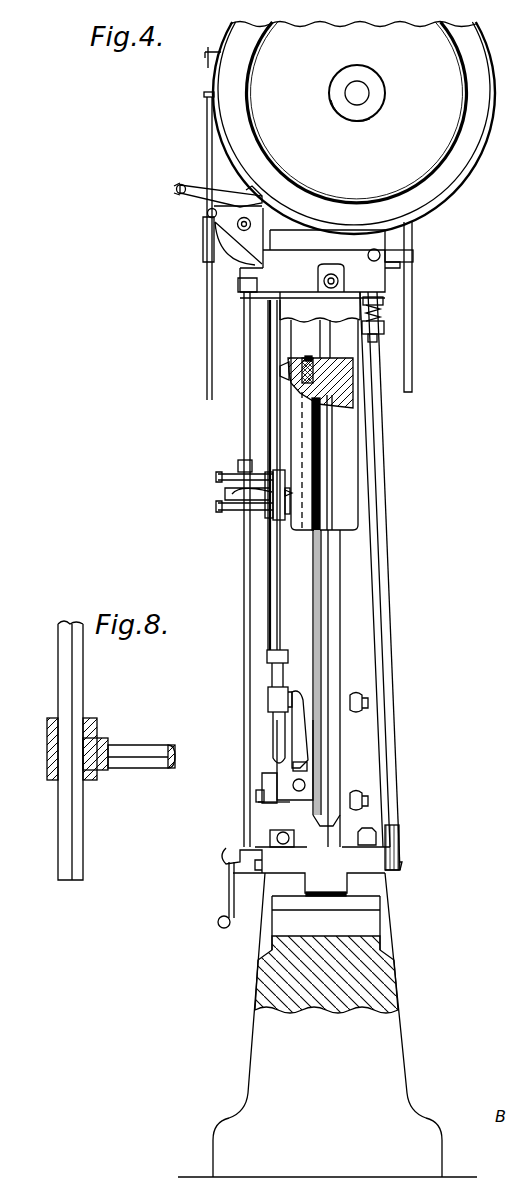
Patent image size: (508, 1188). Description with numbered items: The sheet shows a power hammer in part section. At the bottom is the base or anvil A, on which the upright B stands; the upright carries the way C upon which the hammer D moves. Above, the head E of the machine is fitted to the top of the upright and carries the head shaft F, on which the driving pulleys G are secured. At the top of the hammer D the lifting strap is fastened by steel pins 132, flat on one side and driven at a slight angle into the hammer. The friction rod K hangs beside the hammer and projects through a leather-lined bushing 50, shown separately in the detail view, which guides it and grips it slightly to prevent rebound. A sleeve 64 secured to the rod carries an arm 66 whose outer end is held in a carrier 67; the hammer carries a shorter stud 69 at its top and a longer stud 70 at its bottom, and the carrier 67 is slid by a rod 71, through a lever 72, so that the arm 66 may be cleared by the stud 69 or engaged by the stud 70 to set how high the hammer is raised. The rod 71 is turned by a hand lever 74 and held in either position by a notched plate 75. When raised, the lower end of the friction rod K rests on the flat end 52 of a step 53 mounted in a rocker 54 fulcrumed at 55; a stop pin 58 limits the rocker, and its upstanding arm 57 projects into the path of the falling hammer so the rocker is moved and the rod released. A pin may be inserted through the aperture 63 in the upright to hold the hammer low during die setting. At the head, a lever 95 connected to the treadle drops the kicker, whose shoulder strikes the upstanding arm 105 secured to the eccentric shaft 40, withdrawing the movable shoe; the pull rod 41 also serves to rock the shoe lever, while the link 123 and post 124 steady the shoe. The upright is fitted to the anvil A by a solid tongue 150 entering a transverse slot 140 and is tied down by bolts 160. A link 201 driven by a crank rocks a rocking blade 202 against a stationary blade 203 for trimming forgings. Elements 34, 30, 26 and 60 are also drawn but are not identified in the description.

In FIG. 4, the driving pulleys G is at (466, 165).
In FIG. 4, the head shaft F is at (368, 97).
In FIG. 4, the lever 95 is at (210, 50).
In FIG. 4, the link 123 is at (215, 94).
In FIG. 4, the post 124 is at (207, 146).
In FIG. 4, the pull rod 41 is at (212, 286).
In FIG. 4, the lever 34 is at (198, 197).
In FIG. 4, the upstanding arm 105 is at (252, 192).
In FIG. 4, the eccentric shaft 40 is at (248, 228).
In FIG. 4, the head E is at (386, 243).
In FIG. 4, the post 30 is at (413, 284).
In FIG. 4, the adjusting pin 26 is at (322, 348).
In FIG. 4, the upright B is at (372, 466).
In FIG. 4, the link 201 is at (386, 521).
In FIG. 4, the friction rod K is at (268, 352).
In FIG. 8, the friction rod K is at (80, 702).
In FIG. 4, the stud 69 is at (282, 372).
In FIG. 4, the hammer D is at (355, 438).
In FIG. 4, the steel pins 132 is at (306, 358).
In FIG. 4, the way C is at (335, 558).
In FIG. 4, the rod 71 is at (243, 423).
In FIG. 4, the lever 72 is at (242, 460).
In FIG. 4, the aperture 63 is at (218, 477).
In FIG. 4, the carrier 67 is at (225, 494).
In FIG. 4, the arm 66 is at (240, 507).
In FIG. 4, the sleeve 64 is at (278, 520).
In FIG. 4, the stud 70 is at (293, 493).
In FIG. 4, the collar 60 is at (267, 657).
In FIG. 4, the leather-lined bushing 50 is at (268, 702).
In FIG. 8, the leather-lined bushing 50 is at (50, 768).
In FIG. 4, the step 53 is at (278, 762).
In FIG. 4, the upstanding arm 57 is at (295, 732).
In FIG. 4, the stop pin 58 is at (306, 770).
In FIG. 4, the rocker 54 is at (282, 804).
In FIG. 4, the flat end 52 is at (258, 792).
In FIG. 4, the fulcrum 55 is at (262, 804).
In FIG. 4, the bolts 160 is at (376, 836).
In FIG. 4, the rocking blade 202 is at (399, 836).
In FIG. 4, the stationary blade 203 is at (400, 866).
In FIG. 4, the anvil A is at (396, 1033).
In FIG. 4, the transverse slot 140 is at (352, 893).
In FIG. 4, the solid tongue 150 is at (340, 886).
In FIG. 4, the notched plate 75 is at (228, 862).
In FIG. 4, the hand lever 74 is at (229, 904).